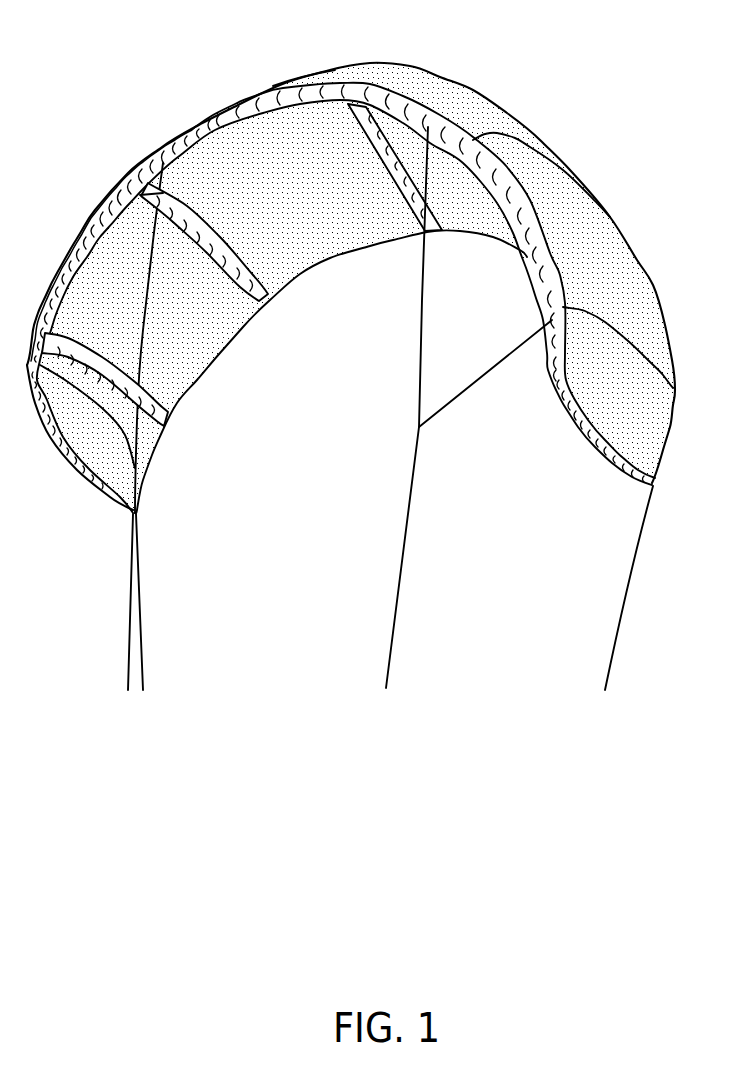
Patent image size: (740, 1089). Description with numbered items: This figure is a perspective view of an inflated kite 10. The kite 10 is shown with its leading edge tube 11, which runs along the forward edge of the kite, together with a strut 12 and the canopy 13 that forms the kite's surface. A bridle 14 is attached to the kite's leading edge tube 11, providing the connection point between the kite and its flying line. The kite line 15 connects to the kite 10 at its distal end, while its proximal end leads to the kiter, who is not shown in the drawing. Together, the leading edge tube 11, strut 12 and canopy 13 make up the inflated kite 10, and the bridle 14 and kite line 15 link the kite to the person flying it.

The inflated kite 10 is at (529, 95).
The leading edge tube 11 is at (187, 130).
The strut 12 is at (244, 296).
The canopy 13 is at (170, 390).
The bridle 14 is at (421, 317).
The kite line 15 is at (393, 620).